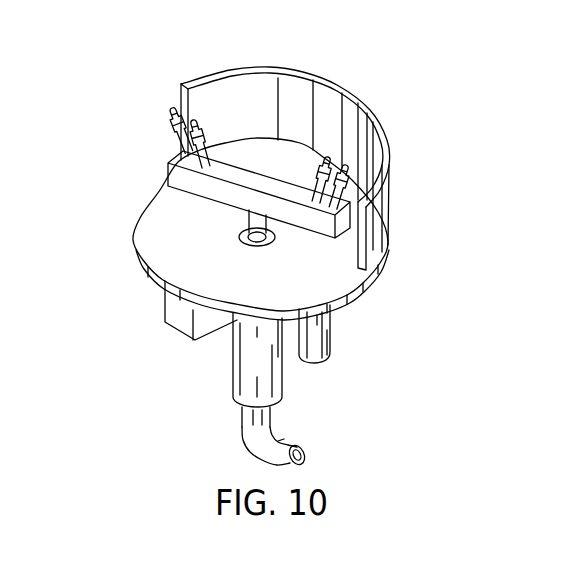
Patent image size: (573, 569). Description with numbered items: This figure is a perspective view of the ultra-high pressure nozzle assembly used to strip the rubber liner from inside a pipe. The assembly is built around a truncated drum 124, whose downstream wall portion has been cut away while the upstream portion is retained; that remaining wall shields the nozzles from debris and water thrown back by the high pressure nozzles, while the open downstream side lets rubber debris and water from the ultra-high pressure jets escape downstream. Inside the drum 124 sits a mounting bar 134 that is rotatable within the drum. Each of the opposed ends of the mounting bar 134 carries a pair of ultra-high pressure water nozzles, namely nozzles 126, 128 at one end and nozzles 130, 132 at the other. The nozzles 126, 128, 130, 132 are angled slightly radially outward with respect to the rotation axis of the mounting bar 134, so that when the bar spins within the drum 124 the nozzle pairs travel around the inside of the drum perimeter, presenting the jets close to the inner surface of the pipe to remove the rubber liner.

The truncated drum 124 is at (298, 93).
The ultra-high pressure water nozzle 126 is at (350, 178).
The ultra-high pressure water nozzle 128 is at (323, 168).
The ultra-high pressure water nozzle 130 is at (186, 147).
The ultra-high pressure water nozzle 132 is at (176, 124).
The mounting bar 134 is at (200, 190).